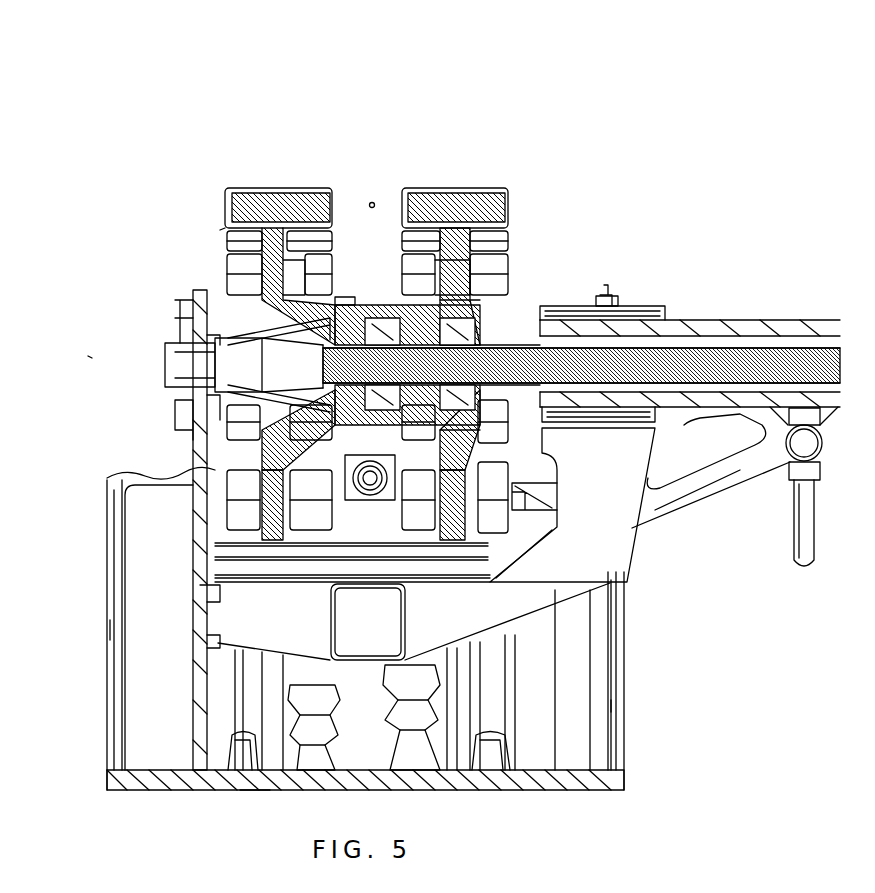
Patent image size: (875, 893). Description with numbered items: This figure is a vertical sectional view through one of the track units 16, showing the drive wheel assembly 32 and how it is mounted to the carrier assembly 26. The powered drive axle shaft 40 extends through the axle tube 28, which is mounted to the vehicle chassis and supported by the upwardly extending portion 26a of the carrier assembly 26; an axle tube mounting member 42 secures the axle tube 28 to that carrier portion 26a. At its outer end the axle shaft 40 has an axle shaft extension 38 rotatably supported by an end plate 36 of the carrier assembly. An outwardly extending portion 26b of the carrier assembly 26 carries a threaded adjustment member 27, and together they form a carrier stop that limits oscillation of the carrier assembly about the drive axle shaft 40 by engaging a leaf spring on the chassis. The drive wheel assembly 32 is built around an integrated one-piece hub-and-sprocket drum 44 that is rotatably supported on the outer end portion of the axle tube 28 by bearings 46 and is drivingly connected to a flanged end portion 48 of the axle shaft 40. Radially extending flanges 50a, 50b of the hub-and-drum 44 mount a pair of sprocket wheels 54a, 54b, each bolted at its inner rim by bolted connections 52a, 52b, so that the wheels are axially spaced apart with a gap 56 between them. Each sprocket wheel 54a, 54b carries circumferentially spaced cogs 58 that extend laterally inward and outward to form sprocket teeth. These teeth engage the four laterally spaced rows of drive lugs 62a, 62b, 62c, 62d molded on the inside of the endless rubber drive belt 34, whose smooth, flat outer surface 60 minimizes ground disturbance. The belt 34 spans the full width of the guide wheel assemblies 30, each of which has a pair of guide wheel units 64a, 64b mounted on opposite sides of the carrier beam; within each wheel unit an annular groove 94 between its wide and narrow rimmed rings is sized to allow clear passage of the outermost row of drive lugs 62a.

The track unit 16 is at (88, 356).
The carrier assembly 26 is at (632, 563).
The upwardly extending portion of carrier assembly 26a is at (650, 438).
The outwardly extending portion of carrier assembly 26b is at (750, 490).
The threaded adjustment member 27 is at (828, 452).
The axle tube 28 is at (716, 322).
The guide wheel assembly 30 is at (98, 672).
The drive wheel assembly 32 is at (183, 222).
The drive belt 34 is at (108, 798).
The end plate 36 is at (205, 462).
The axle shaft extension 38 is at (168, 345).
The drive axle shaft 40 is at (605, 310).
The axle tube mounting member 42 is at (622, 318).
The hub-and-sprocket drum 44 is at (380, 300).
The bearings 46 is at (340, 330).
The flanged end portion of axle shaft 48 is at (343, 300).
The hub/drum flange 50a is at (300, 292).
The hub/drum flange 50b is at (450, 265).
The bolted connection 52a is at (292, 300).
The bolted connection 52b is at (445, 258).
The sprocket wheel 54a is at (283, 183).
The sprocket wheel 54b is at (470, 183).
The gap 56 is at (372, 200).
The cogs 58 is at (228, 186).
The outer surface of drive belt 60 is at (255, 792).
The first row of drive lugs 62a is at (240, 760).
The second row of drive lugs 62b is at (348, 760).
The third row of drive lugs 62c is at (450, 715).
The fourth row of drive lugs 62d is at (505, 750).
The guide wheel unit 64a is at (118, 628).
The guide wheel unit 64b is at (620, 705).
The annular groove 94 is at (242, 688).